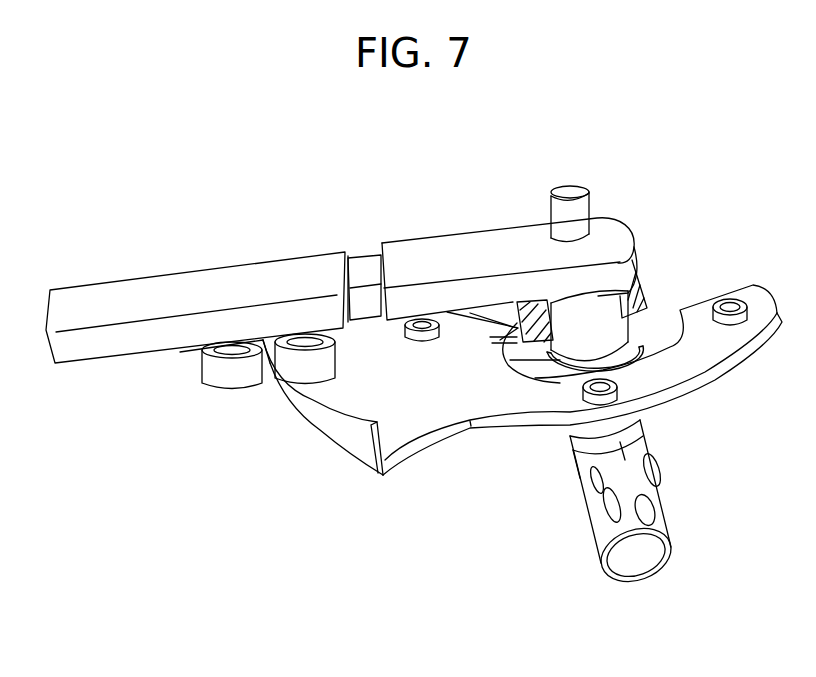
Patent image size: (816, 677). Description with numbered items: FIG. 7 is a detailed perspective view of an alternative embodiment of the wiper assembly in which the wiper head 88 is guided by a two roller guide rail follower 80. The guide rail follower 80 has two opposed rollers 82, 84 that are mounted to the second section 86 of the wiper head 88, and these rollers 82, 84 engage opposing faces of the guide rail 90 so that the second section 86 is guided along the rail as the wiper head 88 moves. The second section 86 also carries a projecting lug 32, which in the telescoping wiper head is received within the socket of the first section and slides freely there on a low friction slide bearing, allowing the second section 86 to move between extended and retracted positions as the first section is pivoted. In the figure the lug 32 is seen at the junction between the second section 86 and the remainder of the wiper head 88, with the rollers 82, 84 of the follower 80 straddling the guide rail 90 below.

The projecting lug 32 is at (367, 272).
The guide rail follower 80 is at (440, 532).
The roller 82 is at (212, 377).
The roller 84 is at (308, 370).
The second section 86 is at (213, 273).
The wiper head 88 is at (607, 157).
The guide rail 90 is at (347, 435).